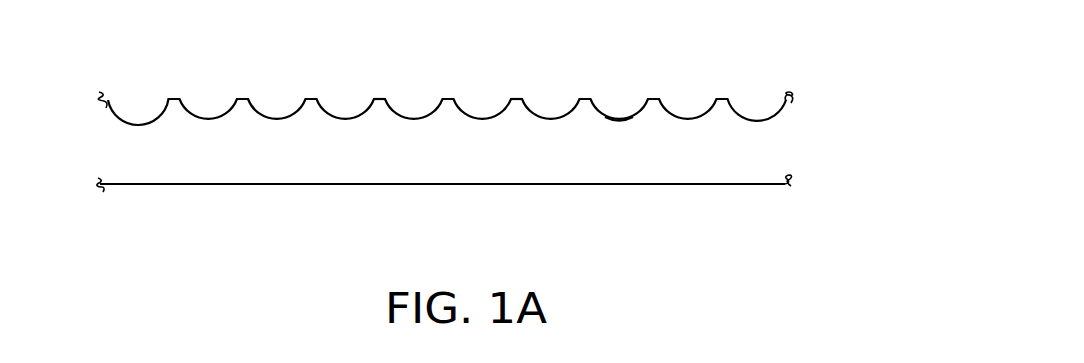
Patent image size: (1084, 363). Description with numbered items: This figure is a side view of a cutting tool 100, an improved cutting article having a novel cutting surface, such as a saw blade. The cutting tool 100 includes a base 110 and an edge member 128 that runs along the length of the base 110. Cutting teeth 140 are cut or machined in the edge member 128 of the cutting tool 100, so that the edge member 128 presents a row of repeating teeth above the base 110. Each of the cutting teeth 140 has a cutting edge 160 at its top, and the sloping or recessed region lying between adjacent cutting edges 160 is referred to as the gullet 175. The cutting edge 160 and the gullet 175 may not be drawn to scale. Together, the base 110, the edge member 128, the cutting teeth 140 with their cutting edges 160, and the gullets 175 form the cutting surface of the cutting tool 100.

The cutting tool 100 is at (862, 109).
The base 110 is at (160, 167).
The edge member 128 is at (165, 127).
The cutting teeth 140 is at (392, 108).
The cutting edge 160 is at (515, 107).
The gullet 175 is at (618, 120).